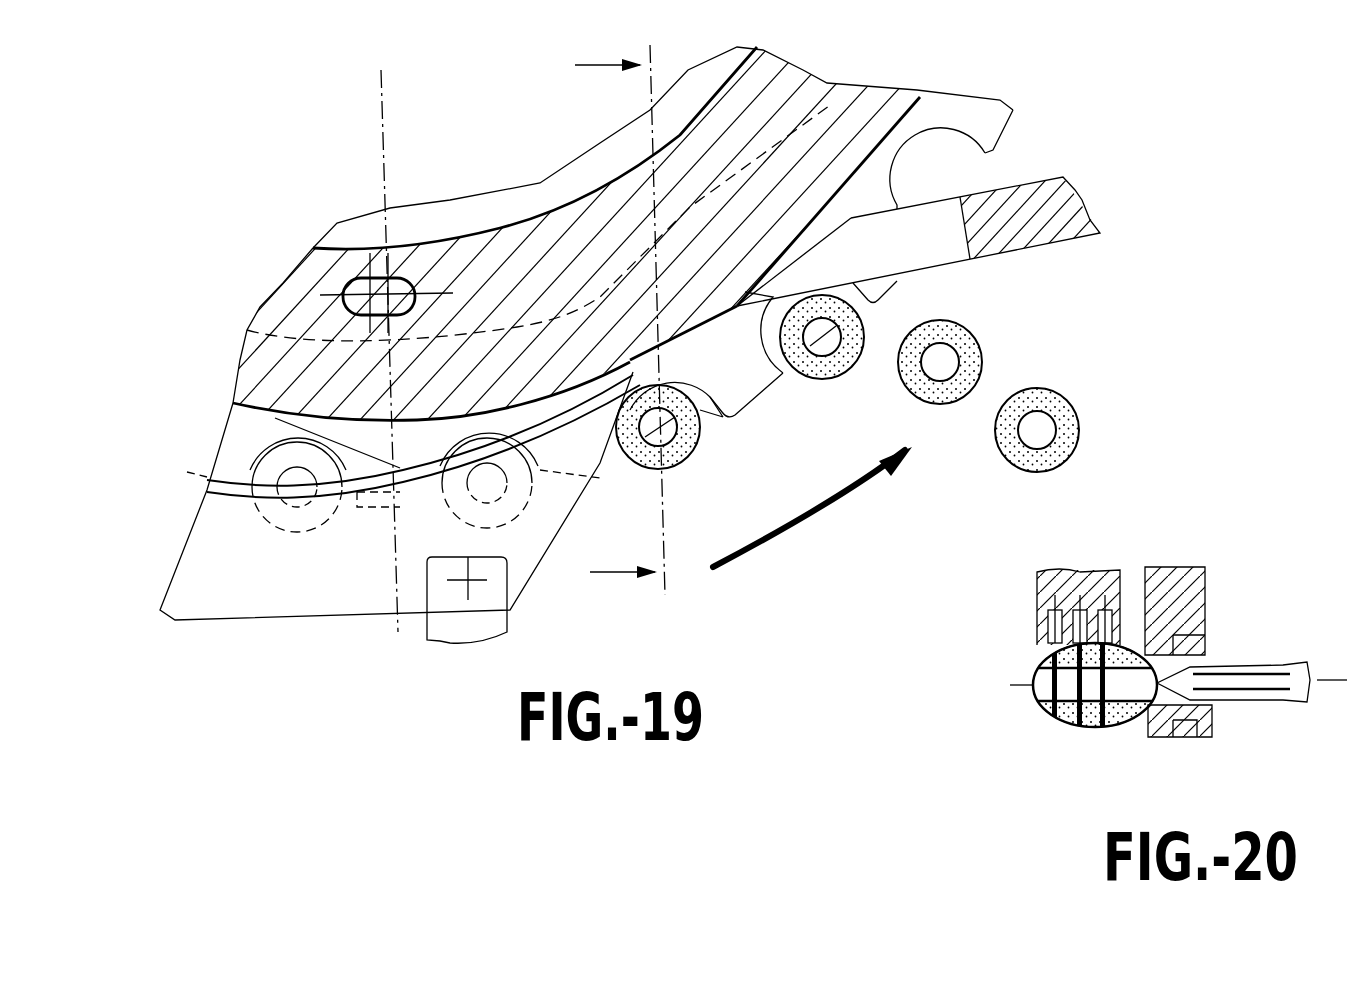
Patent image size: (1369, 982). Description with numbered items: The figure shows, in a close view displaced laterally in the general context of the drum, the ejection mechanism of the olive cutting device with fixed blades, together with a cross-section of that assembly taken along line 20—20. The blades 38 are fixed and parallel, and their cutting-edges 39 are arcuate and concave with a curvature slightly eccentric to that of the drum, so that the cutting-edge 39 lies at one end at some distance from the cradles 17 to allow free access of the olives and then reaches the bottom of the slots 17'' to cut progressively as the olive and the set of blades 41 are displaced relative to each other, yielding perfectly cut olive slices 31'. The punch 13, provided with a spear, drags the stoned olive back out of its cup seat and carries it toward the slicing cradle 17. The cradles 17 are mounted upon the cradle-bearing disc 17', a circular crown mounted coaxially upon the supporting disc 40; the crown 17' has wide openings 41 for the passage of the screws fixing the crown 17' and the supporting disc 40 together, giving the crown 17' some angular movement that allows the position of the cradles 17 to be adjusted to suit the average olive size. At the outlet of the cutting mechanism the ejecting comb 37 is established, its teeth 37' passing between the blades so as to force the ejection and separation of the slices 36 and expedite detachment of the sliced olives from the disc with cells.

In FIG. 20, the punch 13 is at (1283, 668).
In FIG. 20, the slicing cradle 17 is at (1050, 652).
In FIG. 19, the cradle-bearing disc 17' is at (775, 181).
In FIG. 20, the slots 17'' is at (1132, 538).
In FIG. 19, the section line 20- 20 is at (597, 325).
In FIG. 19, the olive slices 31' is at (890, 383).
In FIG. 20, the slices 36 is at (1097, 724).
In FIG. 19, the ejecting comb 37 is at (962, 213).
In FIG. 19, the teeth 37' is at (875, 176).
In FIG. 19, the blades 38 is at (223, 592).
In FIG. 19, the cutting-edges 39 is at (407, 472).
In FIG. 19, the supporting disc 40 is at (450, 217).
In FIG. 19, the wide openings 41 is at (357, 296).